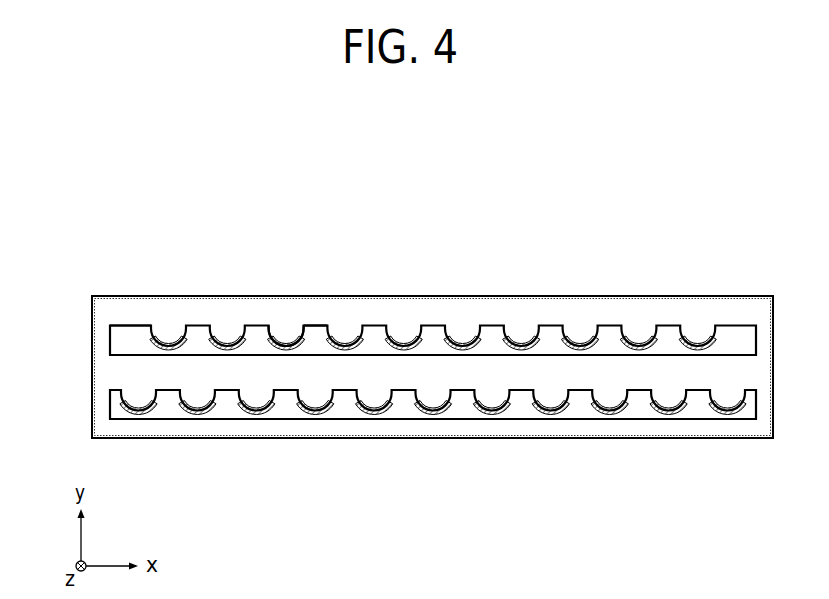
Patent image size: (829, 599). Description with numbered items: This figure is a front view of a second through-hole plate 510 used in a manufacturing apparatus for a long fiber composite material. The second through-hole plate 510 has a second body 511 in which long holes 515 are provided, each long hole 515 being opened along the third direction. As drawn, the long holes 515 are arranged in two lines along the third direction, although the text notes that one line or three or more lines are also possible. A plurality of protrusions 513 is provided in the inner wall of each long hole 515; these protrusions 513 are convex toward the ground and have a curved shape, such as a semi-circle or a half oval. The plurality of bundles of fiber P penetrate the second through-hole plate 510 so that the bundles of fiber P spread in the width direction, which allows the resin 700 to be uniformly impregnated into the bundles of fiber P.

The second through-hole plate 510 is at (92, 272).
The second body 511 is at (428, 310).
The protrusion 513 is at (271, 337).
The long hole 515 is at (110, 340).
The resin 700 is at (737, 338).
The bundle of fiber P is at (312, 344).